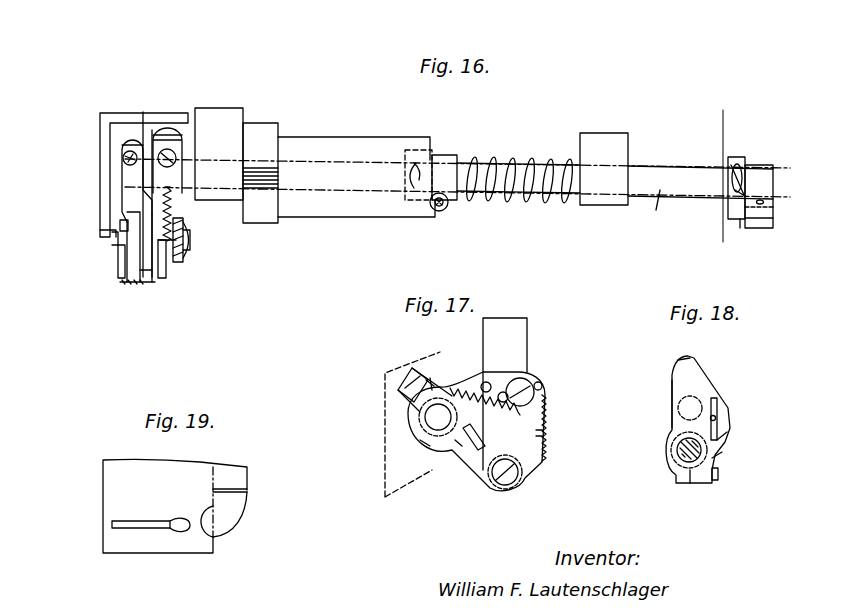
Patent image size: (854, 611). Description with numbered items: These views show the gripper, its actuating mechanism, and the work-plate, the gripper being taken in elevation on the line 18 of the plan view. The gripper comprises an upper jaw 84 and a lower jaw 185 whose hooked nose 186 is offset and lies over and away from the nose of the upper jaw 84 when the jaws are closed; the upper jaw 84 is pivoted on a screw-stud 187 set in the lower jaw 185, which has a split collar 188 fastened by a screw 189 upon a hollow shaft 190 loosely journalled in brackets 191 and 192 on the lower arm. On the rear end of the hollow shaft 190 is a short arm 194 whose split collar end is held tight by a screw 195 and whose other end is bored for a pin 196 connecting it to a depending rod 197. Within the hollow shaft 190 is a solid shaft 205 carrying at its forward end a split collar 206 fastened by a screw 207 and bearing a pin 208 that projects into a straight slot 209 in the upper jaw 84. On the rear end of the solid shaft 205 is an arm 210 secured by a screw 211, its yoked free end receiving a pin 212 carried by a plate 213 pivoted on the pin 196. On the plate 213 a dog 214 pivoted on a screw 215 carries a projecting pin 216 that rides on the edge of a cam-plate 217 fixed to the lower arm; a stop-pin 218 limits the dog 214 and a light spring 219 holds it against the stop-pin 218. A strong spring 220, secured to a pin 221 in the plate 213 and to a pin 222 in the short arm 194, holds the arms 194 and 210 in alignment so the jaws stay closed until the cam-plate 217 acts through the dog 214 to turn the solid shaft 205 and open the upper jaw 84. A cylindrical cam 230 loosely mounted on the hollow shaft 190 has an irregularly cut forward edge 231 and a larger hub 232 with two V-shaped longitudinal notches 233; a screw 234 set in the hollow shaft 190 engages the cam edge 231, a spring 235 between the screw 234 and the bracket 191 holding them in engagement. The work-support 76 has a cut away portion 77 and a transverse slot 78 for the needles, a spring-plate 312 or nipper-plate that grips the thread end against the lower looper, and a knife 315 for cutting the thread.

In FIG. 16, the section line 18- 18 is at (721, 178).
In FIG. 19, the work-support 76 is at (130, 468).
In FIG. 19, the cut away portion 77 is at (228, 489).
In FIG. 19, the transverse slot 78 is at (180, 528).
In FIG. 16, the upper jaw 84 is at (748, 198).
In FIG. 18, the upper jaw 84 is at (706, 385).
In FIG. 16, the lower jaw 185 is at (732, 196).
In FIG. 18, the lower jaw 185 is at (674, 383).
In FIG. 16, the hooked nose 186 is at (745, 176).
In FIG. 18, the hooked nose 186 is at (694, 356).
In FIG. 18, the screw-stud 187 is at (684, 410).
In FIG. 18, the split collar 188 is at (703, 480).
In FIG. 18, the screw 189 is at (718, 474).
In FIG. 16, the hollow shaft 190 is at (679, 170).
In FIG. 17, the hollow shaft 190 is at (426, 418).
In FIG. 18, the hollow shaft 190 is at (684, 462).
In FIG. 16, the bracket 191 is at (612, 202).
In FIG. 16, the bracket 192 is at (222, 118).
In FIG. 16, the short arm 194 is at (175, 205).
In FIG. 17, the short arm 194 is at (428, 455).
In FIG. 16, the screw 195 is at (167, 150).
In FIG. 17, the screw 195 is at (424, 375).
In FIG. 16, the pin 196 is at (190, 250).
In FIG. 17, the pin 196 is at (508, 478).
In FIG. 16, the depending rod 197 is at (181, 265).
In FIG. 17, the depending rod 197 is at (527, 346).
In FIG. 16, the solid shaft 205 is at (149, 165).
In FIG. 17, the solid shaft 205 is at (436, 420).
In FIG. 18, the solid shaft 205 is at (678, 452).
In FIG. 16, the split collar 206 is at (773, 213).
In FIG. 18, the split collar 206 is at (728, 436).
In FIG. 16, the screw 207 is at (760, 202).
In FIG. 18, the screw 207 is at (722, 455).
In FIG. 16, the pin 208 is at (742, 222).
In FIG. 18, the pin 208 is at (718, 420).
In FIG. 18, the straight slot 209 is at (716, 413).
In FIG. 16, the arm 210 is at (130, 173).
In FIG. 17, the arm 210 is at (406, 402).
In FIG. 16, the screw 211 is at (123, 160).
In FIG. 17, the screw 211 is at (432, 382).
In FIG. 17, the pin 212 is at (473, 444).
In FIG. 16, the plate 213 is at (132, 266).
In FIG. 17, the plate 213 is at (528, 448).
In FIG. 16, the dog 214 is at (126, 283).
In FIG. 17, the dog 214 is at (538, 380).
In FIG. 16, the screw 215 is at (118, 260).
In FIG. 17, the screw 215 is at (536, 384).
In FIG. 16, the projecting pin 216 is at (115, 240).
In FIG. 17, the projecting pin 216 is at (503, 392).
In FIG. 16, the cam-plate 217 is at (104, 208).
In FIG. 17, the cam-plate 217 is at (398, 458).
In FIG. 16, the stop-pin 218 is at (121, 226).
In FIG. 17, the stop-pin 218 is at (485, 382).
In FIG. 16, the spring 219 is at (139, 278).
In FIG. 17, the spring 219 is at (548, 415).
In FIG. 16, the spring 220 is at (178, 200).
In FIG. 17, the spring 220 is at (460, 445).
In FIG. 16, the pin 221 is at (162, 250).
In FIG. 17, the pin 221 is at (548, 432).
In FIG. 16, the pin 222 is at (168, 186).
In FIG. 17, the pin 222 is at (468, 386).
In FIG. 16, the cylindrical cam 230 is at (350, 140).
In FIG. 16, the forward edge 231 is at (416, 185).
In FIG. 16, the hub 232 is at (268, 130).
In FIG. 16, the V-shaped longitudinal notches 233 is at (268, 182).
In FIG. 16, the screw 234 is at (445, 207).
In FIG. 16, the spring 235 is at (520, 158).
In FIG. 19, the spring-plate 312 is at (235, 516).
In FIG. 19, the knife 315 is at (118, 530).